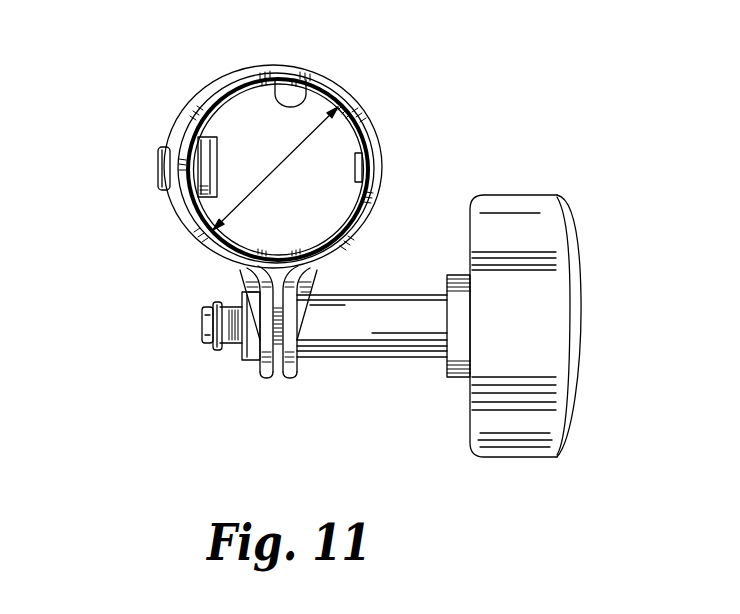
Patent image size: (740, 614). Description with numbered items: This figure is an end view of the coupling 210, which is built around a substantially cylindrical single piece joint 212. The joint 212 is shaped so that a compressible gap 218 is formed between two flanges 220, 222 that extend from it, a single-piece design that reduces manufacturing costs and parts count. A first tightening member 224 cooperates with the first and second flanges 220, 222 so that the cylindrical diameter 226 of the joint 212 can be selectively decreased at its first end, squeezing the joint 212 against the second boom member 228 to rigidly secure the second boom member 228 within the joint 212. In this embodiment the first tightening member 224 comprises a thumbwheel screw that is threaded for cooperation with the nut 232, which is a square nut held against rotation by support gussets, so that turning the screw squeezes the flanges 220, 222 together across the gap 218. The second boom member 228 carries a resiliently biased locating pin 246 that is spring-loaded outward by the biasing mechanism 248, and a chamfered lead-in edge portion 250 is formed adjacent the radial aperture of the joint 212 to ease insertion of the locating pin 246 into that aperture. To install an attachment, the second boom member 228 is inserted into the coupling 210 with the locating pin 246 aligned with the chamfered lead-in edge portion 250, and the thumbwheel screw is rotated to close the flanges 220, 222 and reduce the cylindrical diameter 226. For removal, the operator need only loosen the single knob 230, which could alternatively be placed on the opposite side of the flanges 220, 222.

The coupling 210 is at (440, 143).
The single piece joint 212 is at (363, 110).
The compressible gap 218 is at (283, 372).
The first flange 220 is at (267, 377).
The second flange 222 is at (307, 365).
The first tightening member 224 is at (452, 408).
The cylindrical diameter 226 is at (280, 162).
The second boom member 228 is at (308, 78).
The knob 230 is at (470, 223).
The nut 232 is at (242, 358).
The locating pin 246 is at (155, 173).
The biasing mechanism 248 is at (218, 167).
The chamfered lead-in edge portion 250 is at (180, 202).